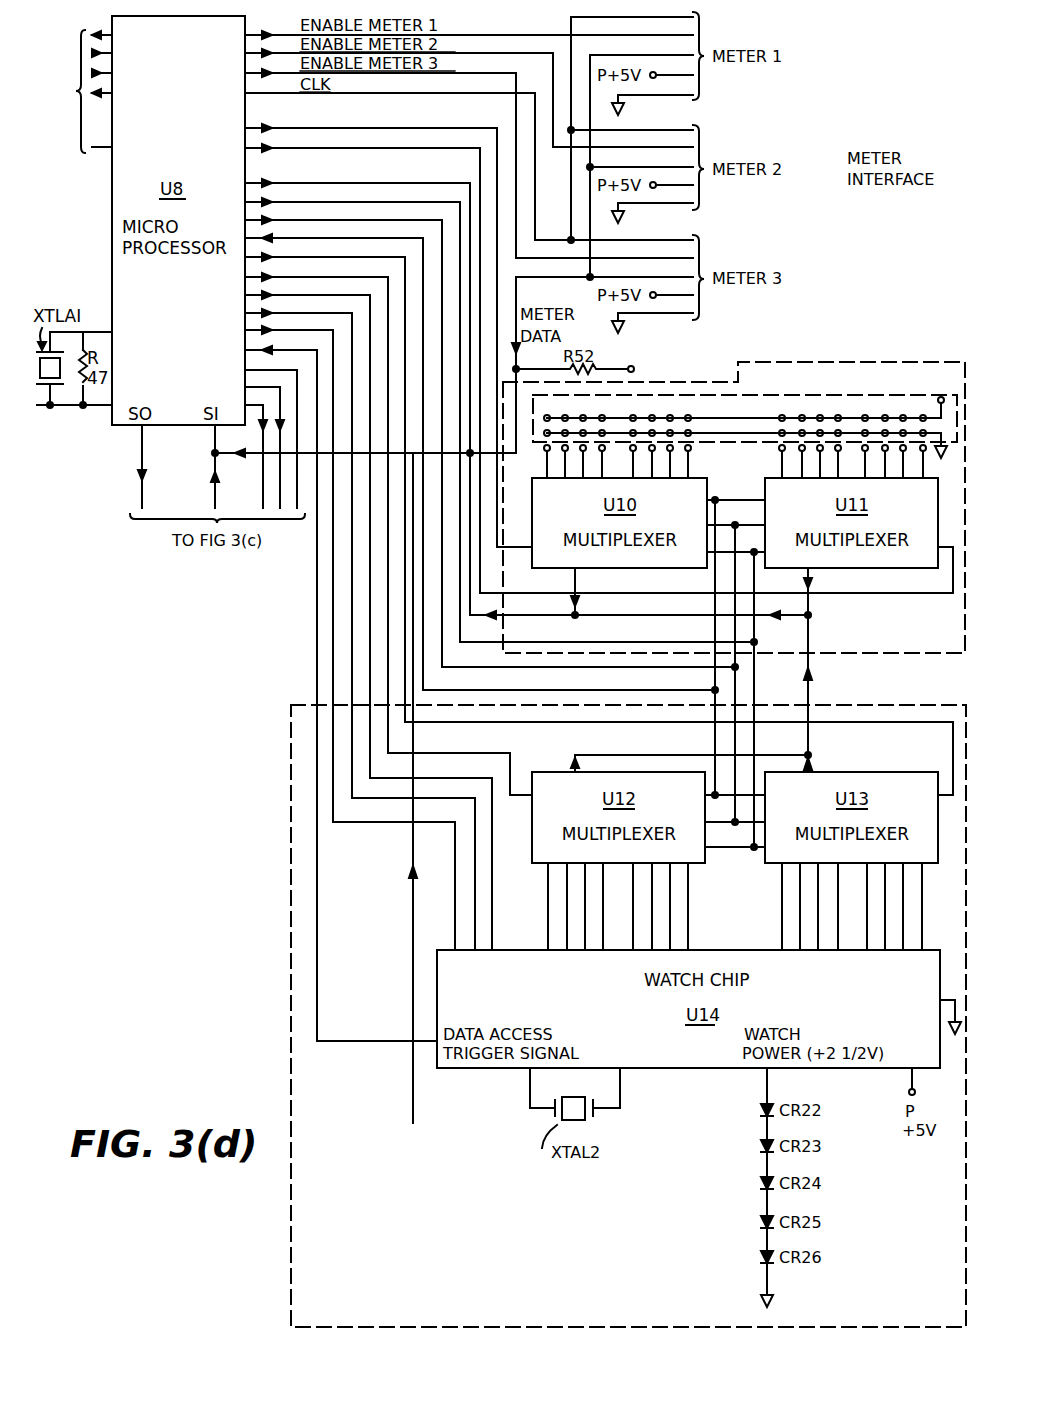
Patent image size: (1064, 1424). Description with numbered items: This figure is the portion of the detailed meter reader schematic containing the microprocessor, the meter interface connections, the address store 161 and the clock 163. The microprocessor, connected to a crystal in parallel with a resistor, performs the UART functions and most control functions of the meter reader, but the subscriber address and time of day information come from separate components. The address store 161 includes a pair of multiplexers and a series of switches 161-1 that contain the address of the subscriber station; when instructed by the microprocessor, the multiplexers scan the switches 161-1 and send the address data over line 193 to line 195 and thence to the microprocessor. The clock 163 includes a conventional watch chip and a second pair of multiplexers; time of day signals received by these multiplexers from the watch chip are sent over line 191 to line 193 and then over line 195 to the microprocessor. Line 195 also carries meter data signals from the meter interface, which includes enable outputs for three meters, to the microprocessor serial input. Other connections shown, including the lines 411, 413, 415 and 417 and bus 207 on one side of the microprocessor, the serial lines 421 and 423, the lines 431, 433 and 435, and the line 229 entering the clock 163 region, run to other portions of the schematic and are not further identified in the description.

The line to FIG 3(b) 411 is at (113, 34).
The line to FIG 3(b) 413 is at (113, 54).
The line to FIG 3(b) 415 is at (113, 75).
The line to FIG 3(b) 417 is at (113, 96).
The bus to FIG 3(b) 207 is at (102, 149).
The serial output line SO 421 is at (140, 499).
The serial input line SI 423 is at (210, 475).
The line to FIG 3(c) 431 is at (263, 447).
The line to FIG 3(c) 433 is at (280, 475).
The line to FIG 3(c) 435 is at (297, 495).
The line 195 is at (363, 453).
The line 193 is at (640, 618).
The address store 161 is at (903, 620).
The switches 161-1 is at (778, 412).
The line 191 is at (812, 702).
The line from FIG 3(c) 229 is at (413, 1118).
The clock 163 is at (562, 1249).